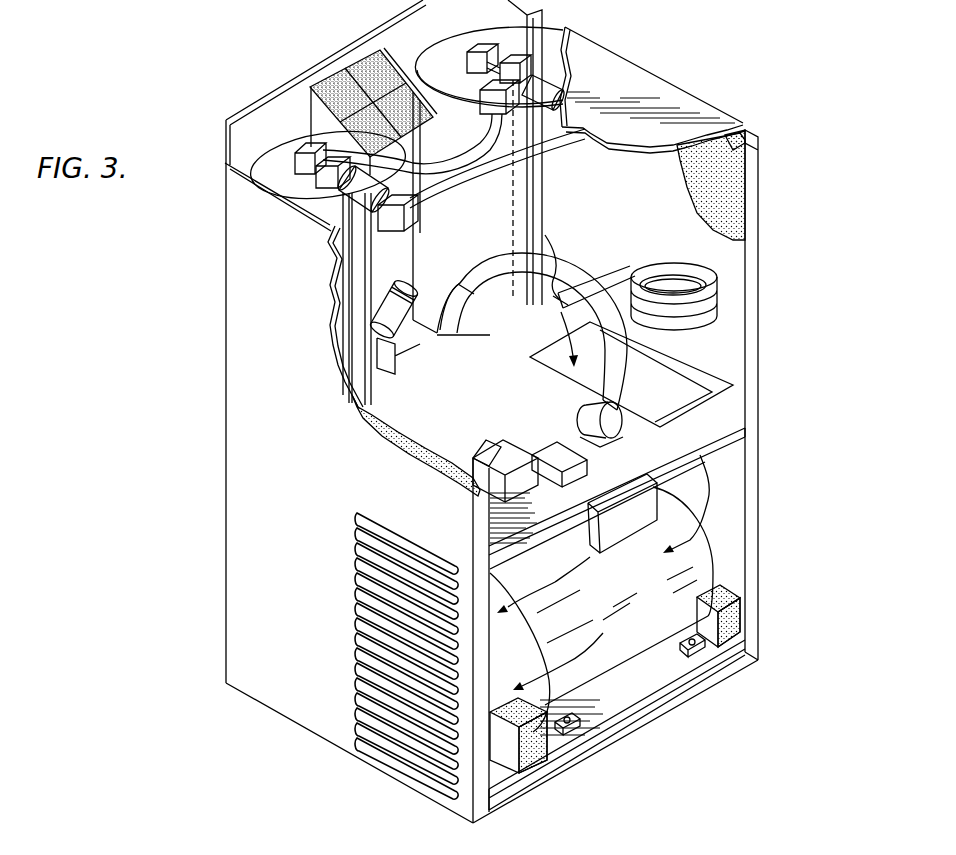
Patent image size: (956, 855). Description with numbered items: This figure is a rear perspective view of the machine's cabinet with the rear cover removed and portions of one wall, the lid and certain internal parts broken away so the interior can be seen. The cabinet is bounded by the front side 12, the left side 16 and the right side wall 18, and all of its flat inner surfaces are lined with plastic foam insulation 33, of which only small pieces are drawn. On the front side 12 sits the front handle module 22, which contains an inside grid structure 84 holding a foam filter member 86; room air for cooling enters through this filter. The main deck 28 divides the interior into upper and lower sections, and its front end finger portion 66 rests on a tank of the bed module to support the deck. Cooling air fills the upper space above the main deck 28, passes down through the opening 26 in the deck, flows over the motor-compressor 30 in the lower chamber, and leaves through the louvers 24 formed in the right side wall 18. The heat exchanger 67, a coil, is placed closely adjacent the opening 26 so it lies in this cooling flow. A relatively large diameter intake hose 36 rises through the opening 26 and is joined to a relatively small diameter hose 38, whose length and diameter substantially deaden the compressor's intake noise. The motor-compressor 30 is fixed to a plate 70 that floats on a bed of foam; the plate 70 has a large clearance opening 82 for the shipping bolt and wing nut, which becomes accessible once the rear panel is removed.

The front side 12 is at (300, 113).
The left side 16 is at (648, 198).
The right side wall 18 is at (243, 407).
The front handle module 22 is at (257, 125).
The louvers 24 is at (357, 697).
The opening 26 is at (555, 366).
The main deck 28 is at (460, 413).
The motor-compressor 30 is at (635, 608).
The plastic foam insulation 33 is at (720, 175).
The intake hose 36 is at (624, 298).
The small diameter hose 38 is at (452, 295).
The front end finger portion 66 is at (403, 350).
The heat exchanger 67 is at (710, 302).
The plate 70 is at (590, 719).
The clearance opening 82 is at (628, 693).
The inside grid structure 84 is at (516, 144).
The filter member 86 is at (480, 196).